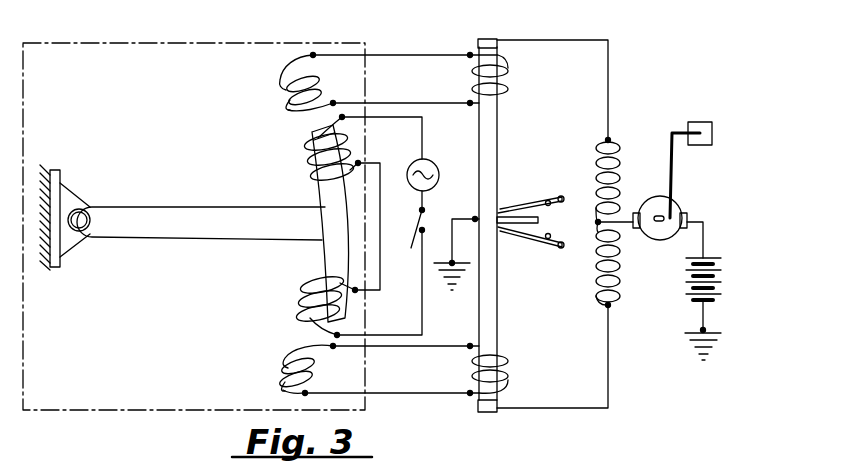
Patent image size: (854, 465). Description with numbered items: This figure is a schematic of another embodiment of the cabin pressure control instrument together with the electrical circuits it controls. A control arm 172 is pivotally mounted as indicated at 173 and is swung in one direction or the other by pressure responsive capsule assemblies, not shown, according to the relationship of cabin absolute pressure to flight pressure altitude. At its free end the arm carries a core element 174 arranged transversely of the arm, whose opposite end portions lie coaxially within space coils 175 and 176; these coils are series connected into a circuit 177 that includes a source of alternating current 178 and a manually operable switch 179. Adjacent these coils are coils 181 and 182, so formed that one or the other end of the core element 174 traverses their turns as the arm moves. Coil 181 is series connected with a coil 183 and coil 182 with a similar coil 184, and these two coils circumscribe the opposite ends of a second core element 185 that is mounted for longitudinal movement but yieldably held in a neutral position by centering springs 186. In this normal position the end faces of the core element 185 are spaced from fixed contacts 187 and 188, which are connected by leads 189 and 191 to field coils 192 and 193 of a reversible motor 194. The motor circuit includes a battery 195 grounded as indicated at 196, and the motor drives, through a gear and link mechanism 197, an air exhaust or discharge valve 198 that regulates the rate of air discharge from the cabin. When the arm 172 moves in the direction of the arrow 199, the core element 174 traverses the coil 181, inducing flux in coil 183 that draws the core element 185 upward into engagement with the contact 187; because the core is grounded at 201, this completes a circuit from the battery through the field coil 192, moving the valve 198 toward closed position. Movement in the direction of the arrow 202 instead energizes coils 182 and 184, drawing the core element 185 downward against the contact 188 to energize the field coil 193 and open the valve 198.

The control arm 172 is at (211, 207).
The pivotal mounting 173 is at (70, 196).
The core element 174 is at (322, 278).
The space coil 175 is at (304, 146).
The space coil 176 is at (300, 306).
The circuit 177 is at (423, 143).
The source of alternating current 178 is at (410, 158).
The manually operable switch 179 is at (420, 236).
The coil 181 is at (280, 97).
The coil 182 is at (278, 352).
The coil 183 is at (508, 75).
The coil 184 is at (510, 364).
The core element 185 is at (490, 150).
The centering springs 186 is at (523, 208).
The fixed contact 187 is at (489, 36).
The fixed contact 188 is at (494, 414).
The lead 189 is at (580, 38).
The lead 191 is at (596, 410).
The field coil 192 is at (633, 136).
The field coil 193 is at (618, 276).
The reversible motor 194 is at (673, 207).
The battery 195 is at (716, 263).
The ground 196 is at (712, 352).
The gear and link mechanism 197 is at (668, 136).
The air exhaust or discharge valve 198 is at (712, 123).
The arrow 199 is at (272, 130).
The ground 201 is at (446, 290).
The arrow 202 is at (263, 255).